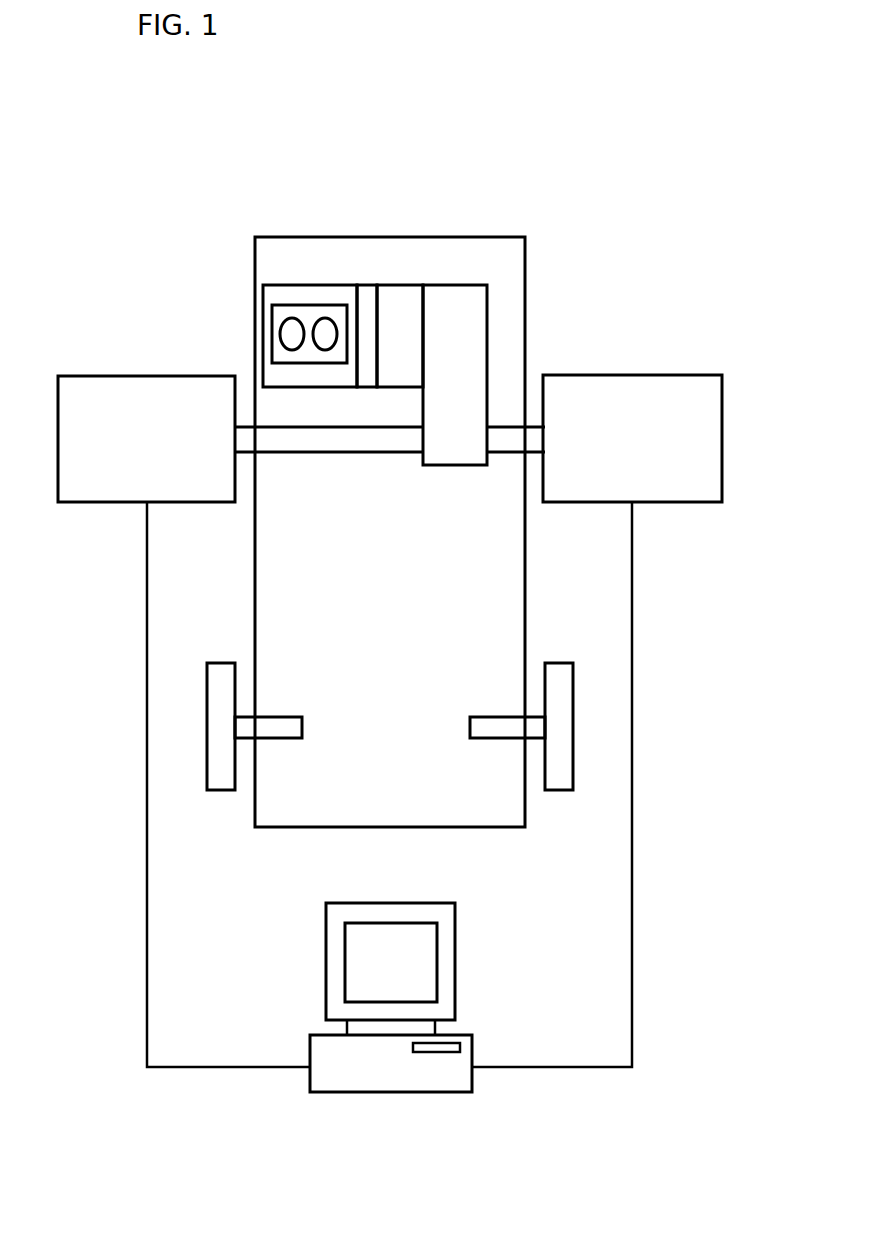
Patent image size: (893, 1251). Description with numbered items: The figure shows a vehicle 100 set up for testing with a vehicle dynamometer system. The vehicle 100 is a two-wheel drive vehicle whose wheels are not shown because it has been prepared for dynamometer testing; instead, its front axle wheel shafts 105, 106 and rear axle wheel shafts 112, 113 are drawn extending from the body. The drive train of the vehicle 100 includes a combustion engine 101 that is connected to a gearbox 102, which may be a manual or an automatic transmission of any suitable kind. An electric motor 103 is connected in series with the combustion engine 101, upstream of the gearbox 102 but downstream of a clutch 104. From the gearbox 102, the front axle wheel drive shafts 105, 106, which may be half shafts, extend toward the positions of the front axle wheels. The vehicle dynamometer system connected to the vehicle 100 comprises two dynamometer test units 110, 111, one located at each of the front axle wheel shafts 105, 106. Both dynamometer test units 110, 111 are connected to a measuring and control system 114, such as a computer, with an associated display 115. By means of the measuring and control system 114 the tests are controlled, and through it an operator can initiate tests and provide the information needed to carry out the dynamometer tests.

The vehicle 100 is at (525, 252).
The combustion engine 101 is at (310, 292).
The gearbox 102 is at (460, 349).
The electric motor 103 is at (406, 305).
The clutch 104 is at (366, 300).
The front axle wheel shaft 105 is at (272, 437).
The front axle wheel shaft 106 is at (515, 438).
The dynamometer test unit 110 is at (122, 388).
The dynamometer test unit 111 is at (713, 437).
The rear axle wheel shaft 112 is at (273, 728).
The rear axle wheel shaft 113 is at (498, 727).
The measuring and control system 114 is at (407, 1065).
The display 115 is at (423, 938).